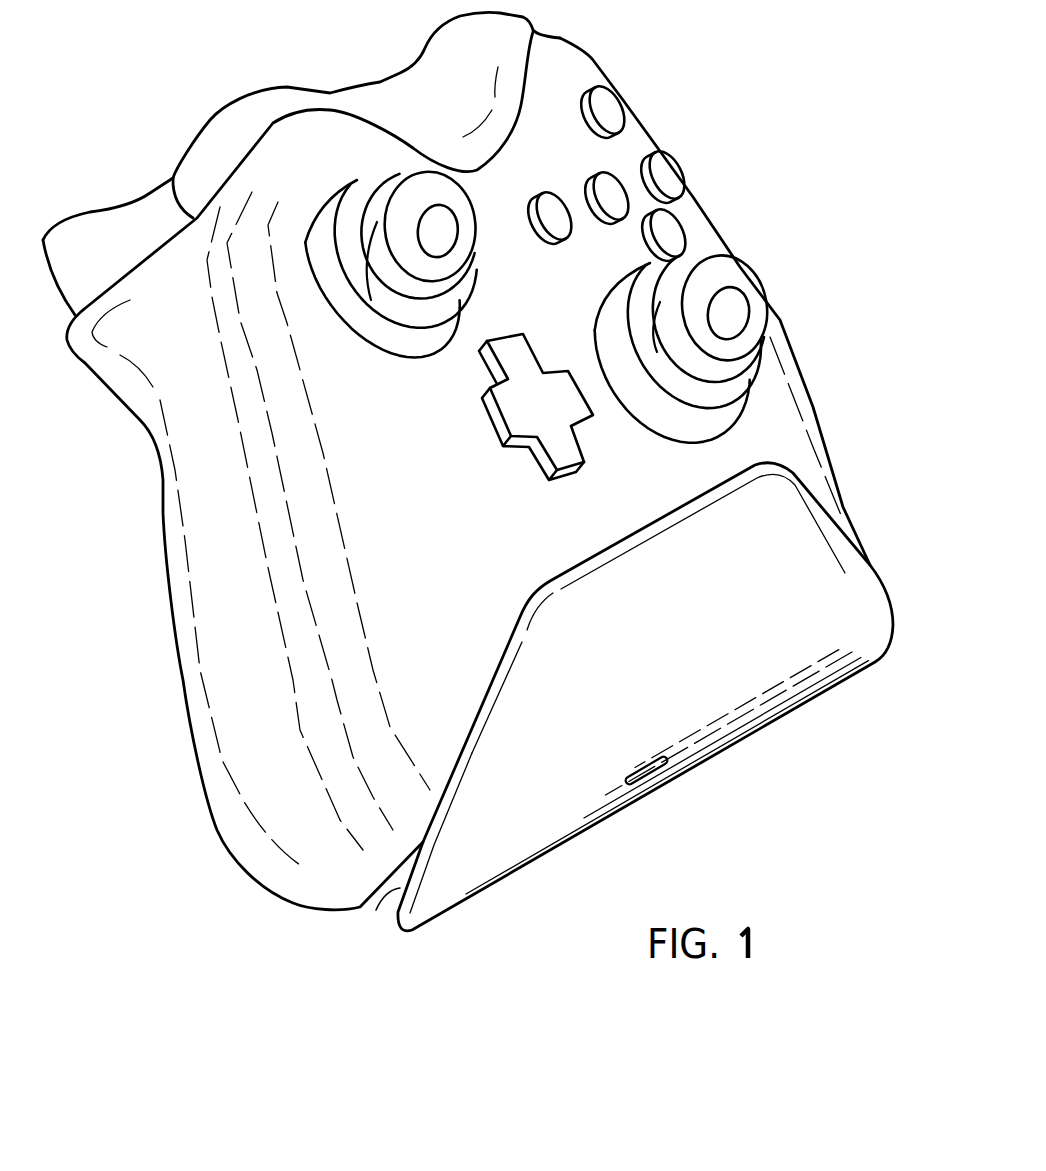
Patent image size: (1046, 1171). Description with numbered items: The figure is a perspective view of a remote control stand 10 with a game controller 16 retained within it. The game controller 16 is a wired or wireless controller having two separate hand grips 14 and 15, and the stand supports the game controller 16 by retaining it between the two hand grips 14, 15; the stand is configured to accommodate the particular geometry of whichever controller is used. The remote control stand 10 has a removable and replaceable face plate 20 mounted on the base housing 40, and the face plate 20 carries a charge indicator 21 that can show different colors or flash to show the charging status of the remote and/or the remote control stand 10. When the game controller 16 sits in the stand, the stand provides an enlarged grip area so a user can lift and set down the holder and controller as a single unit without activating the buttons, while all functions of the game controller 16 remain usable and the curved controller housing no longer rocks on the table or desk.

The remote control stand 10 is at (481, 460).
The hand grip 14 is at (850, 507).
The hand grip 15 is at (220, 832).
The game controller 16 is at (760, 432).
The face plate 20 is at (617, 730).
The charge indicator 21 is at (653, 770).
The base housing 40 is at (380, 913).